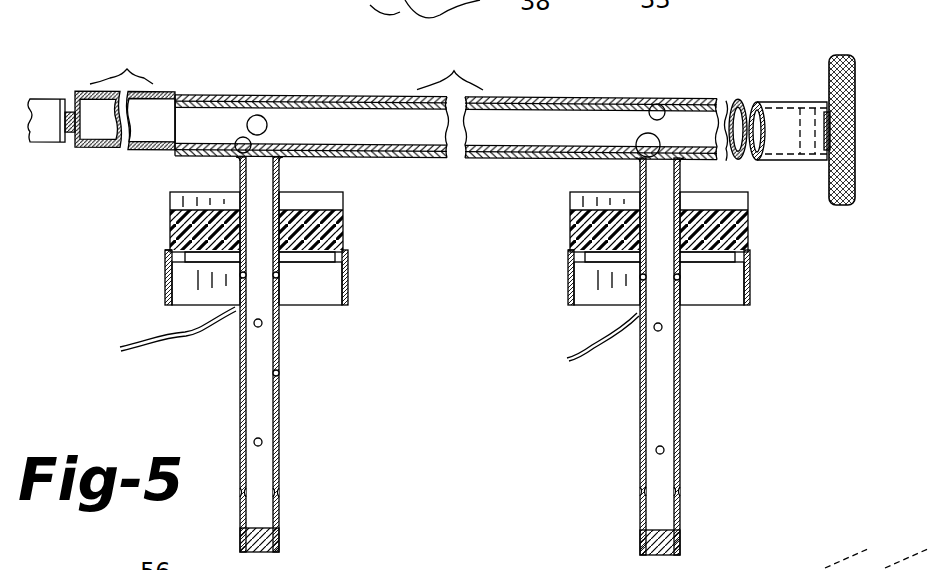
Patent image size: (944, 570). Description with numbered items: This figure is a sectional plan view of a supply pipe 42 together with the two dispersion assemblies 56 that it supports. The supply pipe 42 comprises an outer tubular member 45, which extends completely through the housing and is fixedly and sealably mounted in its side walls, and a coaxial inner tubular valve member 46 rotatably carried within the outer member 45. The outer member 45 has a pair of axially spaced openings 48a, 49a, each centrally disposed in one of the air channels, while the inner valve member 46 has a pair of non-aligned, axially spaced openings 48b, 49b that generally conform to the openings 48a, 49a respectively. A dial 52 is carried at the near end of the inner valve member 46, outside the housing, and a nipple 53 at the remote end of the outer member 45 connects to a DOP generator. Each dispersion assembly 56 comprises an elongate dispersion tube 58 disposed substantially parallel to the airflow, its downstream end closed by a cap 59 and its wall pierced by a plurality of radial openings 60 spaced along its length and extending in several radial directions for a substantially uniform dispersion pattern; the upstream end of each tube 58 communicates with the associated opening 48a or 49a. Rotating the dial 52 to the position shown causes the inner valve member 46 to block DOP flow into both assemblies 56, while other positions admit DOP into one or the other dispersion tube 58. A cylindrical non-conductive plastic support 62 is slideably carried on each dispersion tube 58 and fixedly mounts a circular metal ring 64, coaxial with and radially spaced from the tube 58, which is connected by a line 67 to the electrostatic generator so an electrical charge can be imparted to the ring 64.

The supply pipe 42 is at (312, 94).
The outer tubular member 45 is at (397, 60).
The inner tubular valve member 46 is at (402, 137).
The opening 48a is at (243, 152).
The opening 48b is at (260, 116).
The opening 49a is at (645, 152).
The opening 49b is at (655, 105).
The dial 52 is at (852, 82).
The nipple 53 is at (70, 96).
The dispersion assembly 56 is at (148, 276).
The dispersion tube 58 is at (280, 403).
The cap 59 is at (262, 553).
The openings 60 is at (258, 438).
The cylindrical non-conductive plastic support 62 is at (170, 226).
The circular metal ring 64 is at (348, 288).
The line 67 is at (163, 347).